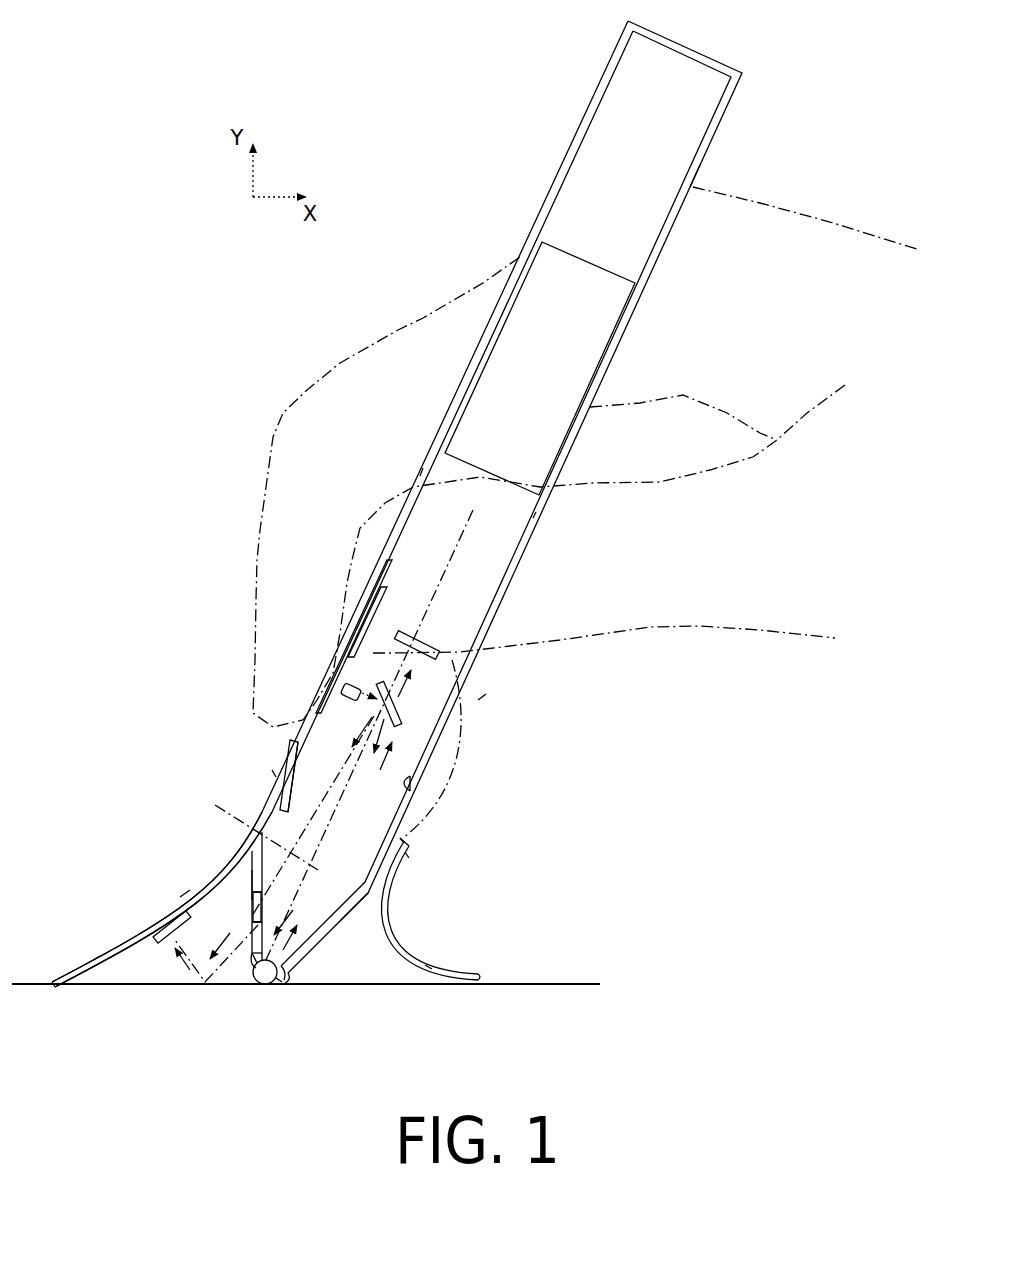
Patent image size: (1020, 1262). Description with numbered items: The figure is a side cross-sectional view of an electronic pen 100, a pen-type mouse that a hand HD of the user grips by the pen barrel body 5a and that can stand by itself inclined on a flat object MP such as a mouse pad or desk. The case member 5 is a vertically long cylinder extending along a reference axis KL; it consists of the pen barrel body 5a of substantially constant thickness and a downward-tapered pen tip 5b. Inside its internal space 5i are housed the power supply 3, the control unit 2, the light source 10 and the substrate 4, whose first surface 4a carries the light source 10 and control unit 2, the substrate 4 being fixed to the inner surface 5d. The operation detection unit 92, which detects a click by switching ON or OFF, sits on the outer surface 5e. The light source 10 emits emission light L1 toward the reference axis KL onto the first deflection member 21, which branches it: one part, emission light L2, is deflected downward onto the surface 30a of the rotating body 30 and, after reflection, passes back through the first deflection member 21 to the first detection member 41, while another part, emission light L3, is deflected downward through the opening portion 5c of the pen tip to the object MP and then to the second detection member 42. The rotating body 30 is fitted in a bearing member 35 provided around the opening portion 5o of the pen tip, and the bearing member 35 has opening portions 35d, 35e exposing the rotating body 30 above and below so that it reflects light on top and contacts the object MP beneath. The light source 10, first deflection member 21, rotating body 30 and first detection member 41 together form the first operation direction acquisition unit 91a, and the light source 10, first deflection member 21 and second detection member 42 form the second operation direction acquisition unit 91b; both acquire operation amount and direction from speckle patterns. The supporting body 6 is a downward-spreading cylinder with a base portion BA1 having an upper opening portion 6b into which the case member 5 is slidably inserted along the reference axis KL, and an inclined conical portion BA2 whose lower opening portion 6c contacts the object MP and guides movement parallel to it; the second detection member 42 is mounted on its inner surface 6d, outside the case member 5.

The electronic pen 100 is at (760, 123).
The hand HD is at (840, 215).
The case member 5 is at (686, 313).
The pen barrel body 5a is at (665, 240).
The pen tip 5b is at (337, 927).
The opening portion 5c is at (250, 897).
The inner surface 5d is at (412, 786).
The outer surface 5e is at (423, 478).
The internal space 5i is at (534, 518).
The opening portion 5o is at (279, 980).
The power supply 3 is at (578, 340).
The control unit 2 is at (382, 612).
The operation detection unit 92 is at (310, 708).
The light source 10 is at (342, 690).
The substrate 4 is at (296, 746).
The first surface 4a is at (289, 808).
The first deflection member 21 is at (403, 706).
The first detection member 41 is at (440, 650).
The second detection member 42 is at (150, 925).
The rotating body 30 is at (280, 970).
The surface 30a is at (268, 978).
The bearing member 35 is at (253, 968).
The opening portion 35d is at (260, 937).
The opening portion 35e is at (262, 973).
The supporting body 6 is at (504, 904).
The upper opening portion 6b is at (403, 840).
The lower opening portion 6c is at (447, 983).
The inner surface 6d is at (65, 980).
The reference axis KL is at (420, 736).
The emission light L1 is at (322, 833).
The emission light L2 is at (390, 707).
The emission light L3 is at (246, 882).
The first operation direction acquisition unit 91a is at (486, 697).
The second operation direction acquisition unit 91b is at (181, 894).
The base portion BA1 is at (272, 770).
The inclined conical portion BA2 is at (93, 960).
The object MP is at (500, 983).